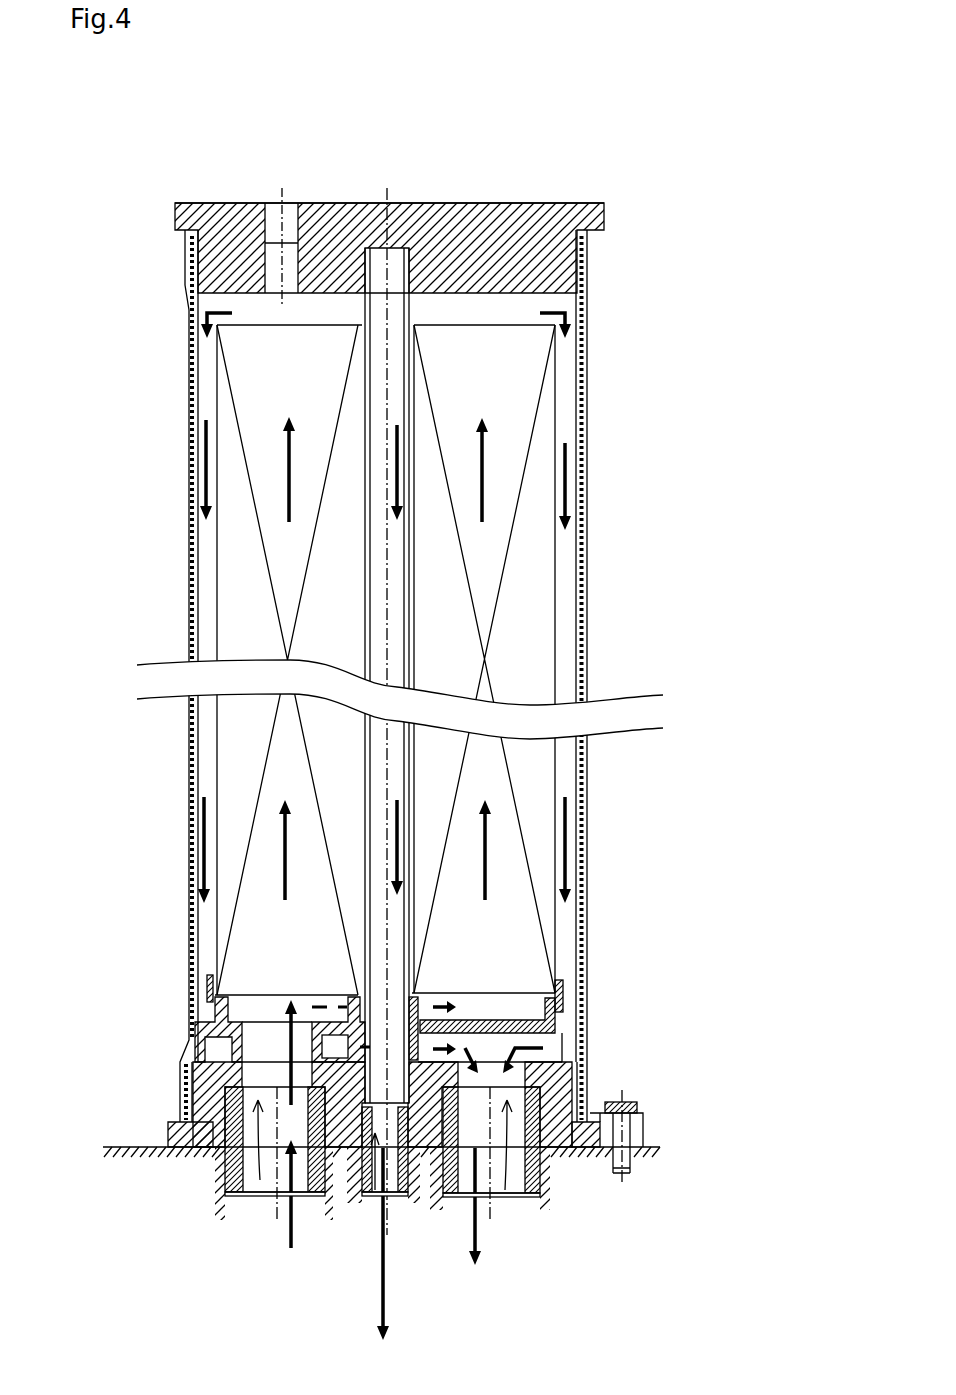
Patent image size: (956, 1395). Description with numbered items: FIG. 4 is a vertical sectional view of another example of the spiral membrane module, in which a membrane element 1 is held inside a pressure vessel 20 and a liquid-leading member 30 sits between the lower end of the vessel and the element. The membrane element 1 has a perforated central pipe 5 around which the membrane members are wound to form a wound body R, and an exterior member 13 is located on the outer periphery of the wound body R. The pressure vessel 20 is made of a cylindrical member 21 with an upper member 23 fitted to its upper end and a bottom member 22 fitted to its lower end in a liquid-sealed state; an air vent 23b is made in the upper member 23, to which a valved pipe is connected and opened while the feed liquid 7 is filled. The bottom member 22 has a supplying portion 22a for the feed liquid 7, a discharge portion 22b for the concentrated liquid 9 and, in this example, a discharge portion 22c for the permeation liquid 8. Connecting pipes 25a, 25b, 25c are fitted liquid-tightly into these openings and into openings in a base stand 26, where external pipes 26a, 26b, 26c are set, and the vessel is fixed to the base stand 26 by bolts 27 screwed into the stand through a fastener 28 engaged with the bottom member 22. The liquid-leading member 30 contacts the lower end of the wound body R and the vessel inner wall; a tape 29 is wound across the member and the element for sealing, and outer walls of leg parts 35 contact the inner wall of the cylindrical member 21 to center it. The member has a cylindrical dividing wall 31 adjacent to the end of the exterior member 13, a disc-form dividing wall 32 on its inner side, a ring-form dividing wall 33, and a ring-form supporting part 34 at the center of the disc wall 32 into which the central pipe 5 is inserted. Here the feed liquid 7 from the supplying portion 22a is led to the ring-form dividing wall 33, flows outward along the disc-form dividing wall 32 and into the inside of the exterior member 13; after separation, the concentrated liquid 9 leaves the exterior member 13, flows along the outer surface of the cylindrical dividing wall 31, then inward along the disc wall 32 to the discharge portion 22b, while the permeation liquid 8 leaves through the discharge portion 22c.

The membrane element 1 is at (573, 428).
The central pipe 5 is at (413, 670).
The feed liquid 7 is at (287, 1232).
The permeation liquid 8 is at (390, 1313).
The concentrated liquid 9 is at (480, 1237).
The exterior member 13 is at (555, 942).
The pressure vessel 20 is at (614, 847).
The cylindrical member 21 is at (583, 883).
The bottom member 22 is at (175, 1135).
The supplying portion 22a is at (257, 1197).
The discharge portion for the concentrated liquid 22b is at (505, 1200).
The discharge portion for the permeation liquid 22c is at (362, 1237).
The upper member 23 is at (175, 222).
The air vent 23b is at (271, 187).
The connecting pipe 25a is at (220, 1170).
The connecting pipe 25b is at (542, 1182).
The connecting pipe 25c is at (410, 1217).
The base stand 26 is at (660, 1147).
The external pipe 26a is at (243, 1197).
The external pipe 26b is at (540, 1200).
The external pipe 26c is at (398, 1240).
The bolt 27 is at (612, 1100).
The fastener 28 is at (645, 1135).
The tape 29 is at (207, 988).
The liquid-leading member 30 is at (511, 1001).
The cylindrical dividing wall 31 is at (230, 1000).
The disc-form dividing wall 32 is at (478, 1020).
The ring-form dividing wall 33 is at (250, 1038).
The ring-form supporting part 34 is at (348, 1000).
The leg part 35 is at (563, 1020).
The wound body R is at (532, 633).